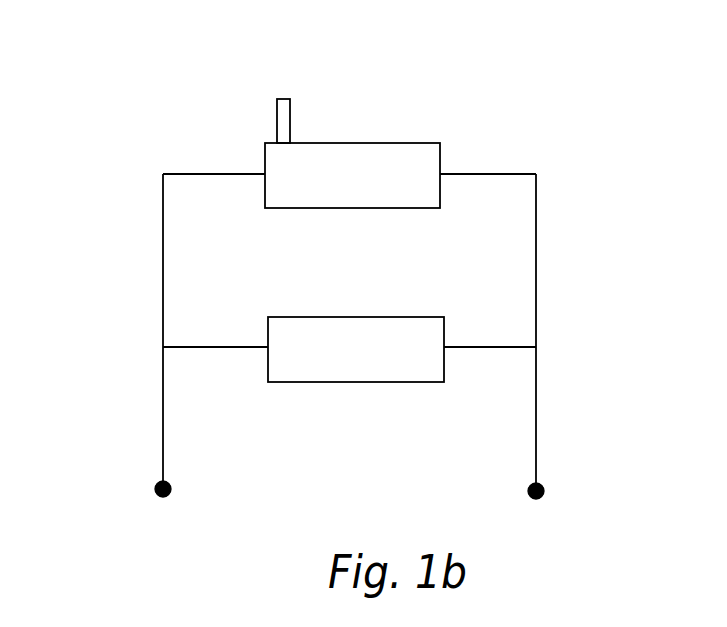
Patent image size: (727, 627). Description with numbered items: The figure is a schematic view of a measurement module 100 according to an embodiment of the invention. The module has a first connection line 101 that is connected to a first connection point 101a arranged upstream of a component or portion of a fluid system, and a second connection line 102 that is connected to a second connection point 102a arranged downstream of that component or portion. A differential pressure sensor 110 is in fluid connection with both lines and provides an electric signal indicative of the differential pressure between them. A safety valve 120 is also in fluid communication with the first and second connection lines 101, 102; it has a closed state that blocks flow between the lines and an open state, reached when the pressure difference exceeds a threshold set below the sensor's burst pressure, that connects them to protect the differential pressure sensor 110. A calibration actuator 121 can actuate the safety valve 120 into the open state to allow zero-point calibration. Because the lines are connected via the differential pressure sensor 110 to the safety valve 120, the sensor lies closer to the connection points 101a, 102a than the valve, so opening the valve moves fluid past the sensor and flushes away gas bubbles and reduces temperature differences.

The measurement module 100 is at (128, 188).
The first connection line 101 is at (162, 405).
The first connection point 101a is at (155, 488).
The second connection line 102 is at (537, 408).
The second connection point 102a is at (543, 491).
The differential pressure sensor 110 is at (350, 342).
The safety valve 120 is at (353, 172).
The calibration actuator 121 is at (283, 132).